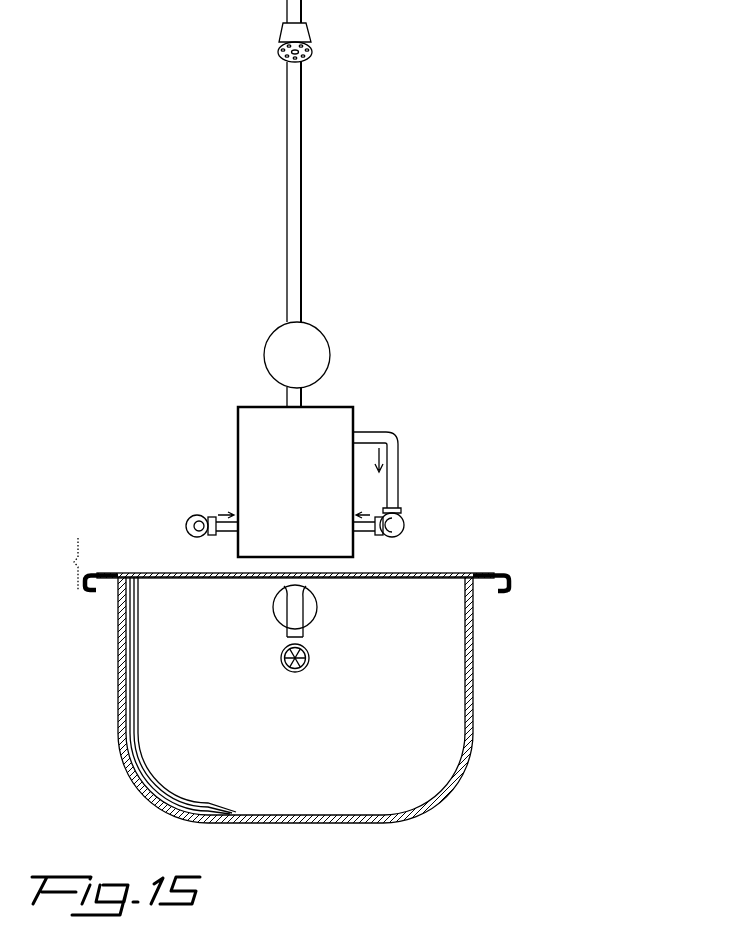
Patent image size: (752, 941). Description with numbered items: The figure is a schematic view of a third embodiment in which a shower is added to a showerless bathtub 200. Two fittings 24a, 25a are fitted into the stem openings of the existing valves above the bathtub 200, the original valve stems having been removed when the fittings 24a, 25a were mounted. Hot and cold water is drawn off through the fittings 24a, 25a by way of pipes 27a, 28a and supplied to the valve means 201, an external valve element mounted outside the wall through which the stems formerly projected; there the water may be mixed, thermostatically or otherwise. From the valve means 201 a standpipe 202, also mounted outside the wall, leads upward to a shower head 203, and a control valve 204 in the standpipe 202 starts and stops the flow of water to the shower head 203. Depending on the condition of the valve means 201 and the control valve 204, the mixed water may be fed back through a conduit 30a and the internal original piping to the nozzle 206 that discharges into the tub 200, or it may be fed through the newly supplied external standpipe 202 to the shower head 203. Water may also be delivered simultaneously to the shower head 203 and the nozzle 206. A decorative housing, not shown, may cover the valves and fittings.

The showerless bathtub 200 is at (128, 755).
The valve means 201 is at (238, 432).
The standpipe 202 is at (288, 143).
The shower head 203 is at (279, 45).
The control valve 204 is at (313, 333).
The nozzle 206 is at (303, 631).
The fitting 24a is at (196, 519).
The fitting 25a is at (392, 525).
The pipe 27a is at (228, 533).
The pipe 28a is at (365, 532).
The conduit 30a is at (372, 432).